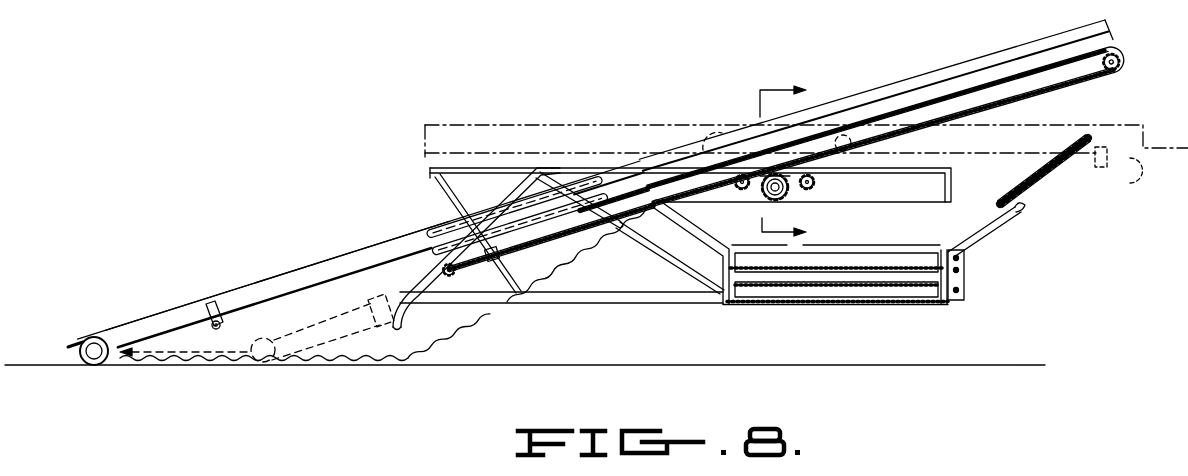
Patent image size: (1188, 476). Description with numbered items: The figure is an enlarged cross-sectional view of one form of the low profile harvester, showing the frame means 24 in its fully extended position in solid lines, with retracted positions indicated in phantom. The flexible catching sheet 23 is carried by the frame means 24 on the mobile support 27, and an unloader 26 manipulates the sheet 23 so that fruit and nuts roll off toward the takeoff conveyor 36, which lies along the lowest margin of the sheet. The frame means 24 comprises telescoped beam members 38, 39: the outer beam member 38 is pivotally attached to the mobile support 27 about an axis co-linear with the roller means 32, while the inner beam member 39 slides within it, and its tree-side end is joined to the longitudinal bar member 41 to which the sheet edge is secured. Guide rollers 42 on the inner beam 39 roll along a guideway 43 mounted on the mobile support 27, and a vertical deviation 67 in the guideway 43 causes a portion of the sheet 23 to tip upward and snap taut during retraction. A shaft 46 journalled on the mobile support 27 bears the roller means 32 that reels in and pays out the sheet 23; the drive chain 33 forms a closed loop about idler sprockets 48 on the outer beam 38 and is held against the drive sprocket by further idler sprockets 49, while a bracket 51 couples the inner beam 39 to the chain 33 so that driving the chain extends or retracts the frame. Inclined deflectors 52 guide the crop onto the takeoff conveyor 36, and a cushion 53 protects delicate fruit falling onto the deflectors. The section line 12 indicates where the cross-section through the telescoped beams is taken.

The section line 12- 12 is at (800, 163).
The flexible catching sheet 23 is at (310, 367).
The frame means 24 is at (361, 244).
The unloader 26 is at (640, 150).
The mobile support 27 is at (705, 311).
The roller means 32 is at (765, 176).
The drive chain 33 is at (945, 128).
The takeoff conveyor 36 is at (972, 278).
The outer beam member 38 is at (432, 221).
The inner beam member 39 is at (242, 293).
The longitudinal bar member 41 is at (90, 364).
The guide rollers 42 is at (222, 324).
The guideway 43 is at (450, 272).
The shaft 46 is at (776, 200).
The idler sprockets 48 is at (1113, 75).
The idler sprockets 49 is at (740, 189).
The bracket 51 is at (493, 267).
The inclined deflectors 52 is at (717, 240).
The cushion 53 is at (1047, 177).
The vertical deviation 67 is at (540, 166).